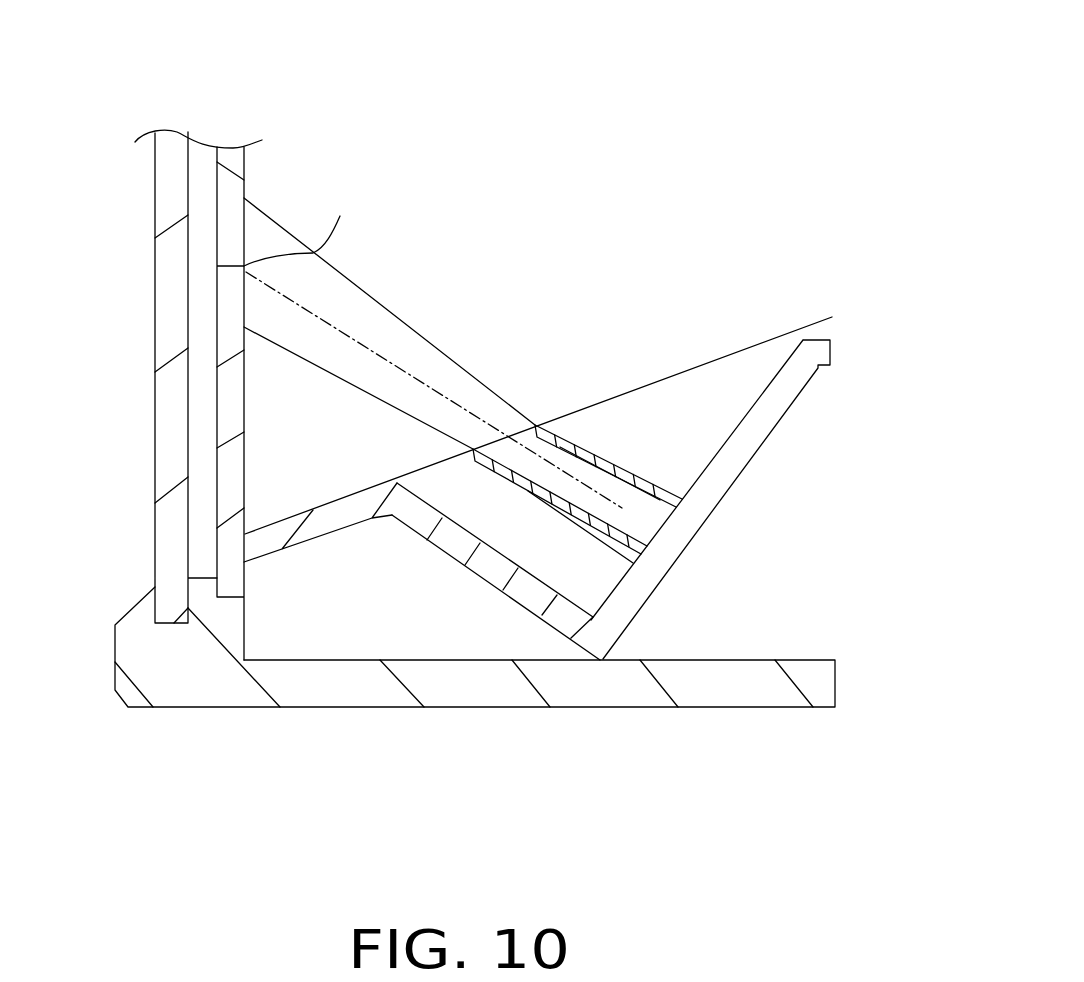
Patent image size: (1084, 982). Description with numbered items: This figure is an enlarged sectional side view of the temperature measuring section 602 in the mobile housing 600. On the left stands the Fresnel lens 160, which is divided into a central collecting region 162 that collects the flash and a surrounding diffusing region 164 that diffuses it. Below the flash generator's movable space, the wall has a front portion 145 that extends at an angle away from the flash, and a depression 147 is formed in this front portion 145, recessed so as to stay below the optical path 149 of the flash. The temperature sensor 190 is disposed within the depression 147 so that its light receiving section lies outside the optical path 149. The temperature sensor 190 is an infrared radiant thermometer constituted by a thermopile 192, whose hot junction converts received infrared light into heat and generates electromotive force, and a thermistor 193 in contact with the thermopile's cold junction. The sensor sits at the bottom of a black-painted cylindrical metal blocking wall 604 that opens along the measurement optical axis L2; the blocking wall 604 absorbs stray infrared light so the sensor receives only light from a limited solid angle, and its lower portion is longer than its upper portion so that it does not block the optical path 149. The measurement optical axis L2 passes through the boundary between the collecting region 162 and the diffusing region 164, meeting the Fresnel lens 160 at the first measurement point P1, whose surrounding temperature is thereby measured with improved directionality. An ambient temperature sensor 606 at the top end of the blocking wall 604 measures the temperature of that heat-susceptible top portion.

The mobile housing 600 is at (158, 57).
The Fresnel lens 160 is at (135, 403).
The collecting region 162 is at (220, 240).
The diffusing region 164 is at (230, 302).
The optical path 149 is at (538, 429).
The front portion 145 is at (334, 537).
The depression 147 is at (486, 581).
The temperature measuring section 602 is at (685, 526).
The blocking wall 604 is at (648, 489).
The ambient temperature sensor 606 is at (517, 467).
The temperature sensor 190 is at (681, 522).
The thermopile 192 is at (650, 528).
The thermistor 193 is at (642, 552).
The first measurement point P1 is at (302, 225).
The measurement optical axis L2 is at (415, 383).